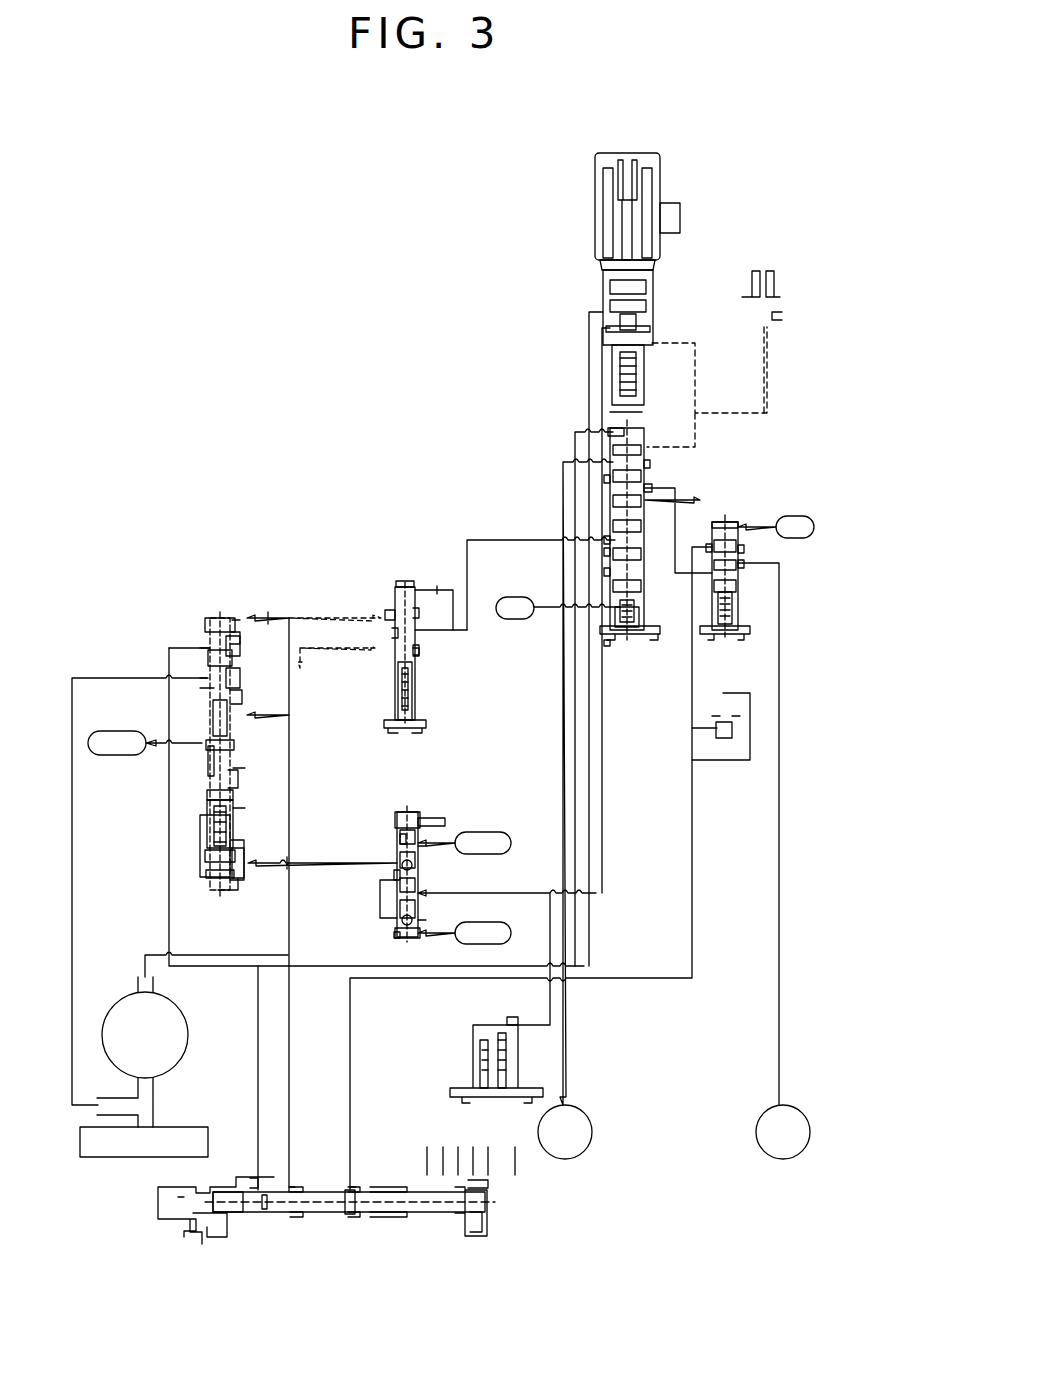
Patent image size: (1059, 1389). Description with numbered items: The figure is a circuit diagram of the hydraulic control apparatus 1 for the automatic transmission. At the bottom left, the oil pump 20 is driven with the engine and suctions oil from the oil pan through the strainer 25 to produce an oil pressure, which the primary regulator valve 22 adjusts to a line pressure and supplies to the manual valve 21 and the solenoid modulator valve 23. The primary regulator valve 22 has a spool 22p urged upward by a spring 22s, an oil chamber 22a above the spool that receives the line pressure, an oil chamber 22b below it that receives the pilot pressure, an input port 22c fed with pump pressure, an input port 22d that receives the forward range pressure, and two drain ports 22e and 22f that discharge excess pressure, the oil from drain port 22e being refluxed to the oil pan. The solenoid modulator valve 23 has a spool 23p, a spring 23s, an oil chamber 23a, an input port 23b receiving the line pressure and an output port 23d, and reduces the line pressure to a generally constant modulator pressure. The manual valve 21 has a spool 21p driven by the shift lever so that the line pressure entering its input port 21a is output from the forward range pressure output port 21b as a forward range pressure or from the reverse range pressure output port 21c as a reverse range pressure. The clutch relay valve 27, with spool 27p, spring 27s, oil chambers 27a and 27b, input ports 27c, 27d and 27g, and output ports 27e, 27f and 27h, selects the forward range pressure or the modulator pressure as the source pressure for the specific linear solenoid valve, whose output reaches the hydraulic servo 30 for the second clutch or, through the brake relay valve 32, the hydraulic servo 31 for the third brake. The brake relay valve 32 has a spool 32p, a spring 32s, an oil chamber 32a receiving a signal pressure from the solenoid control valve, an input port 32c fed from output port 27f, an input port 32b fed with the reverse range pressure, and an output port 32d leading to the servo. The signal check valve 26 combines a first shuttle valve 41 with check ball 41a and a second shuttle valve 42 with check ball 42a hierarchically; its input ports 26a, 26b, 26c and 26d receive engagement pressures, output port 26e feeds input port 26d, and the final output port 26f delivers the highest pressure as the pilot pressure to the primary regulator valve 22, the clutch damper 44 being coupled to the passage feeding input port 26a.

The hydraulic control apparatus 1 is at (425, 122).
The oil pump 20 is at (130, 990).
The manual valve 21 is at (372, 1214).
The input port 21a is at (294, 1182).
The forward range pressure output port 21b is at (251, 1170).
The reverse range pressure output port 21c is at (350, 1188).
The spool 21p is at (250, 1214).
The primary regulator valve 22 is at (187, 615).
The oil chamber 22a is at (238, 620).
The oil chamber 22b is at (231, 881).
The input port 22c is at (228, 700).
The input port 22d is at (202, 646).
The drain port 22e is at (192, 692).
The drain port 22f is at (208, 750).
The spool 22p is at (234, 657).
The spring 22s is at (234, 790).
The solenoid modulator valve 23 is at (412, 546).
The oil chamber 23a is at (426, 584).
The input port 23b is at (378, 608).
The output port 23d is at (428, 634).
The spool 23p is at (424, 654).
The spring 23s is at (394, 689).
The strainer 25 is at (78, 1148).
The signal check valve 26 is at (428, 802).
The input port 26a is at (418, 898).
The input port 26b is at (420, 934).
The input port 26c is at (418, 850).
The input port 26d is at (393, 876).
The output port 26e is at (393, 928).
The output port 26f is at (394, 866).
The C-2 relay valve 27 is at (655, 648).
The oil chamber 27a is at (646, 434).
The oil chamber 27b is at (601, 648).
The input port 27c is at (610, 574).
The input port 27d is at (612, 542).
The output port 27e is at (610, 554).
The output port 27f is at (654, 490).
The input port 27g is at (610, 480).
The output port 27h is at (620, 422).
The spool 27p is at (644, 468).
The spring 27s is at (634, 598).
The hydraulic servo 30 is at (586, 1092).
The hydraulic servo 31 is at (798, 1092).
The B-3 relay valve 32 is at (753, 512).
The oil chamber 32a is at (722, 516).
The input port 32b is at (708, 558).
The input port 32c is at (700, 648).
The output port 32d is at (742, 562).
The spool 32p is at (742, 550).
The spring 32s is at (739, 600).
The first shuttle valve 41 is at (420, 938).
The check ball 41a is at (392, 938).
The second shuttle valve 42 is at (402, 814).
The check ball 42a is at (396, 840).
The C-2 damper 44 is at (472, 1038).